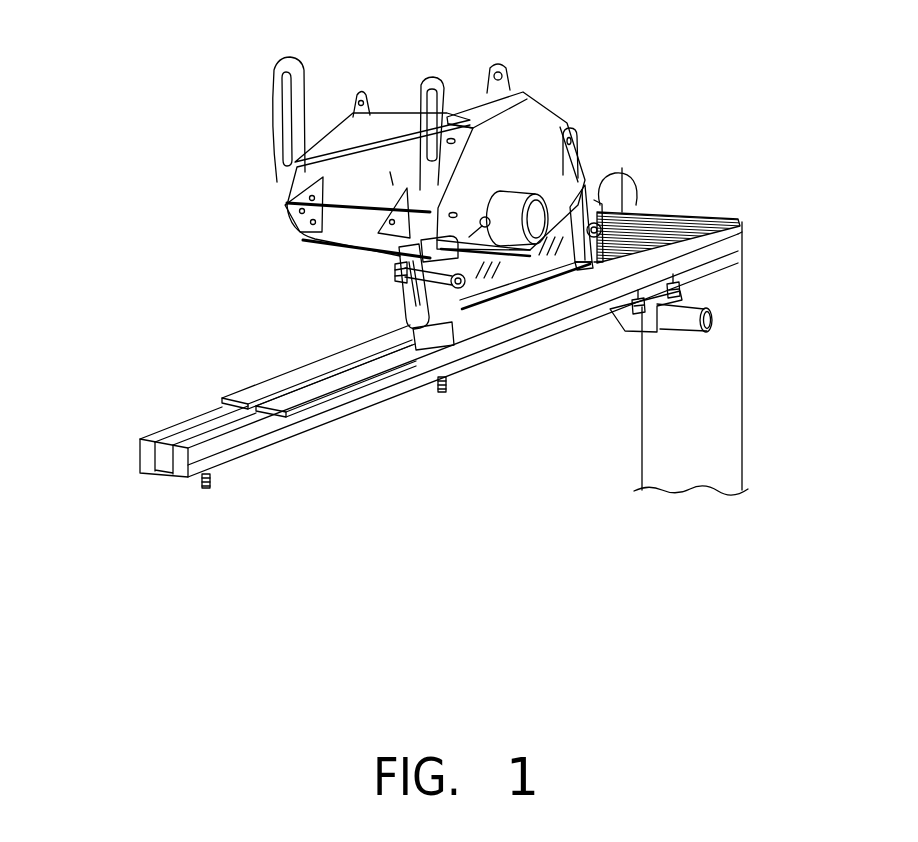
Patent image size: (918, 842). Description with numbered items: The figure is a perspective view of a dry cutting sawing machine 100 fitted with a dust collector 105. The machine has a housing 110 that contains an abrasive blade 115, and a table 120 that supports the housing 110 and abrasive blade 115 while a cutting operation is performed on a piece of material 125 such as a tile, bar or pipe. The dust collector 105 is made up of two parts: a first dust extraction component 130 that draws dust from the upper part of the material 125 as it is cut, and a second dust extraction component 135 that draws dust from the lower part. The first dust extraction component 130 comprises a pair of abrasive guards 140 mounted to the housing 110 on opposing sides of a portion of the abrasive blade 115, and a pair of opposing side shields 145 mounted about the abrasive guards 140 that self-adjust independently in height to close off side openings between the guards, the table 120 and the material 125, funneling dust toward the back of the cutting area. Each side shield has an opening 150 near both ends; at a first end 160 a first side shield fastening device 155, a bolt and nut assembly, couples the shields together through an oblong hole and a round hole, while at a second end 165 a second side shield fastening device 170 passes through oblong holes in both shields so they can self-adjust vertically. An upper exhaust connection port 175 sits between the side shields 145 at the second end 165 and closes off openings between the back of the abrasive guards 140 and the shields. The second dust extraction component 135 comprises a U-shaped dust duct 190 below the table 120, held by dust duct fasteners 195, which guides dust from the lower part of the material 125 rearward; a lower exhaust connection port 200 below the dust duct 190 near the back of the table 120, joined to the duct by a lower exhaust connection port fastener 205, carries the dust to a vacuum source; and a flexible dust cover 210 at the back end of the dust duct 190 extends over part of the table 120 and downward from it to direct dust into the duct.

The dry cutting sawing machine 100 is at (265, 200).
The dust collector 105 is at (622, 218).
The housing 110 is at (381, 127).
The abrasive blade 115 is at (387, 177).
The table 120 is at (140, 457).
The material 125 is at (433, 338).
The first dust extraction component 130 is at (613, 167).
The second dust extraction component 135 is at (741, 229).
The abrasive guards 140 is at (397, 265).
The side shields 145 is at (405, 290).
The opening 150 is at (412, 298).
The first side shield fastening device 155 is at (408, 276).
The first end 160 is at (458, 320).
The second end 165 is at (593, 166).
The second side shield fastening device 170 is at (602, 205).
The upper exhaust connection port 175 is at (620, 183).
The dust duct 190 is at (164, 474).
The dust duct fasteners 195 is at (208, 490).
The lower exhaust connection port 200 is at (688, 329).
The lower exhaust connection port fastener 205 is at (661, 333).
The dust cover 210 is at (698, 217).